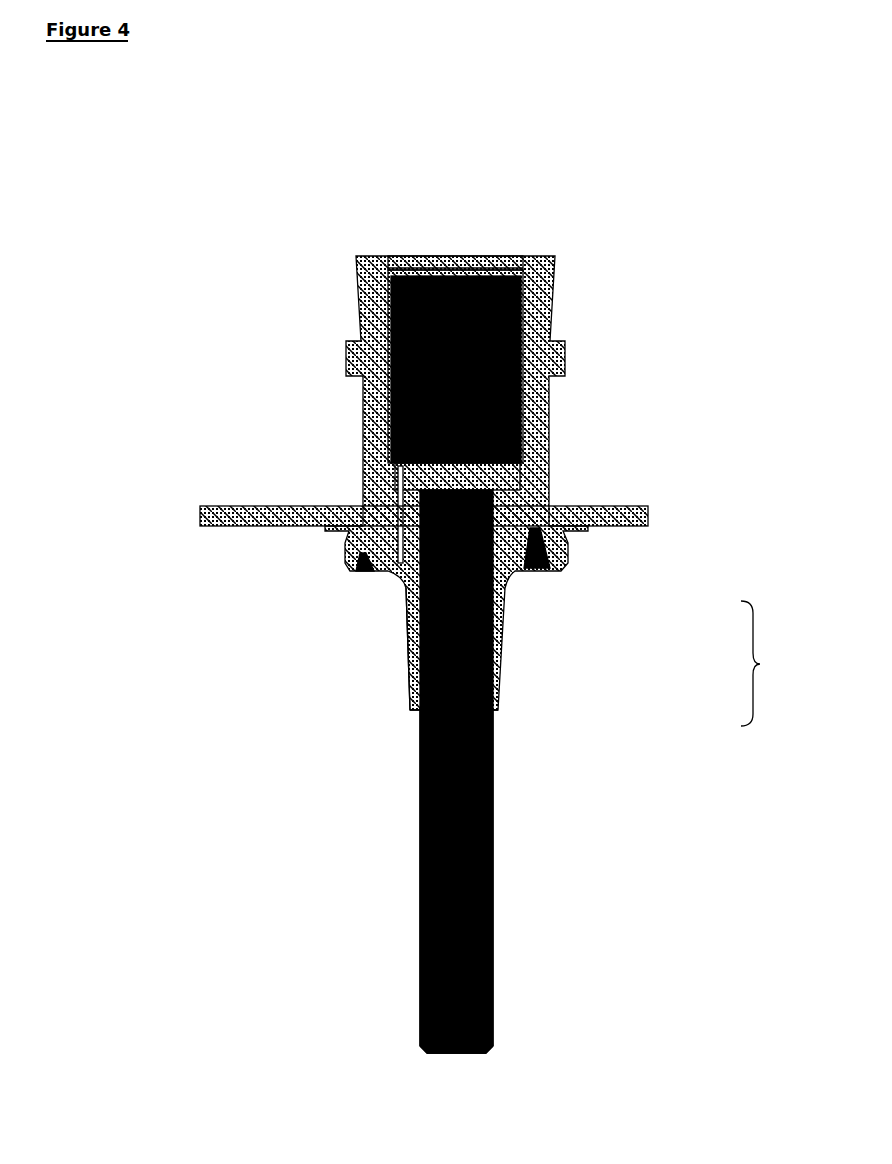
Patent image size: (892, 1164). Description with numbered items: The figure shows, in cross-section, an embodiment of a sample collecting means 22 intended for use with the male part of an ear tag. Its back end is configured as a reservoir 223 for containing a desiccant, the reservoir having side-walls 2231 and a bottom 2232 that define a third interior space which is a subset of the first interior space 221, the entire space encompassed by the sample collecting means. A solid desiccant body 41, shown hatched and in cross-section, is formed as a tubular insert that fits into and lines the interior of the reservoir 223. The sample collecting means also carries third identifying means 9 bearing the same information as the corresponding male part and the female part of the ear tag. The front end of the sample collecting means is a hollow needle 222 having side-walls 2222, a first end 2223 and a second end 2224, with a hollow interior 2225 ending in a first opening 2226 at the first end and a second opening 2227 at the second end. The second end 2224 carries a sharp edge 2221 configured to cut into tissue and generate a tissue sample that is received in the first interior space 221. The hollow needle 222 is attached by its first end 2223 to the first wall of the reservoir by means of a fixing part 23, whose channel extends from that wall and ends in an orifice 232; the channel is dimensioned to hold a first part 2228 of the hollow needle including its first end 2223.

The sample collecting means 22 is at (478, 661).
The reservoir 223 is at (436, 440).
The bottom of reservoir 2232 is at (468, 242).
The side-walls of reservoir 2231 is at (557, 345).
The solid desiccant body 41 is at (540, 399).
The third identifying means 9 is at (250, 498).
The first end of hollow needle 2223 is at (544, 581).
The first opening of hollow needle 2226 is at (547, 560).
The first part of hollow needle 2228 is at (787, 663).
The fixing part 23 is at (398, 594).
The orifice of fixing part 232 is at (488, 702).
The first interior space 221 is at (473, 821).
The hollow needle 222 is at (400, 650).
The side-walls of hollow needle 2222 is at (502, 831).
The hollow interior of hollow needle 2225 is at (397, 898).
The second end of hollow needle 2224 is at (574, 1036).
The second opening of hollow needle 2227 is at (500, 1023).
The sharp edge 2221 is at (482, 1040).